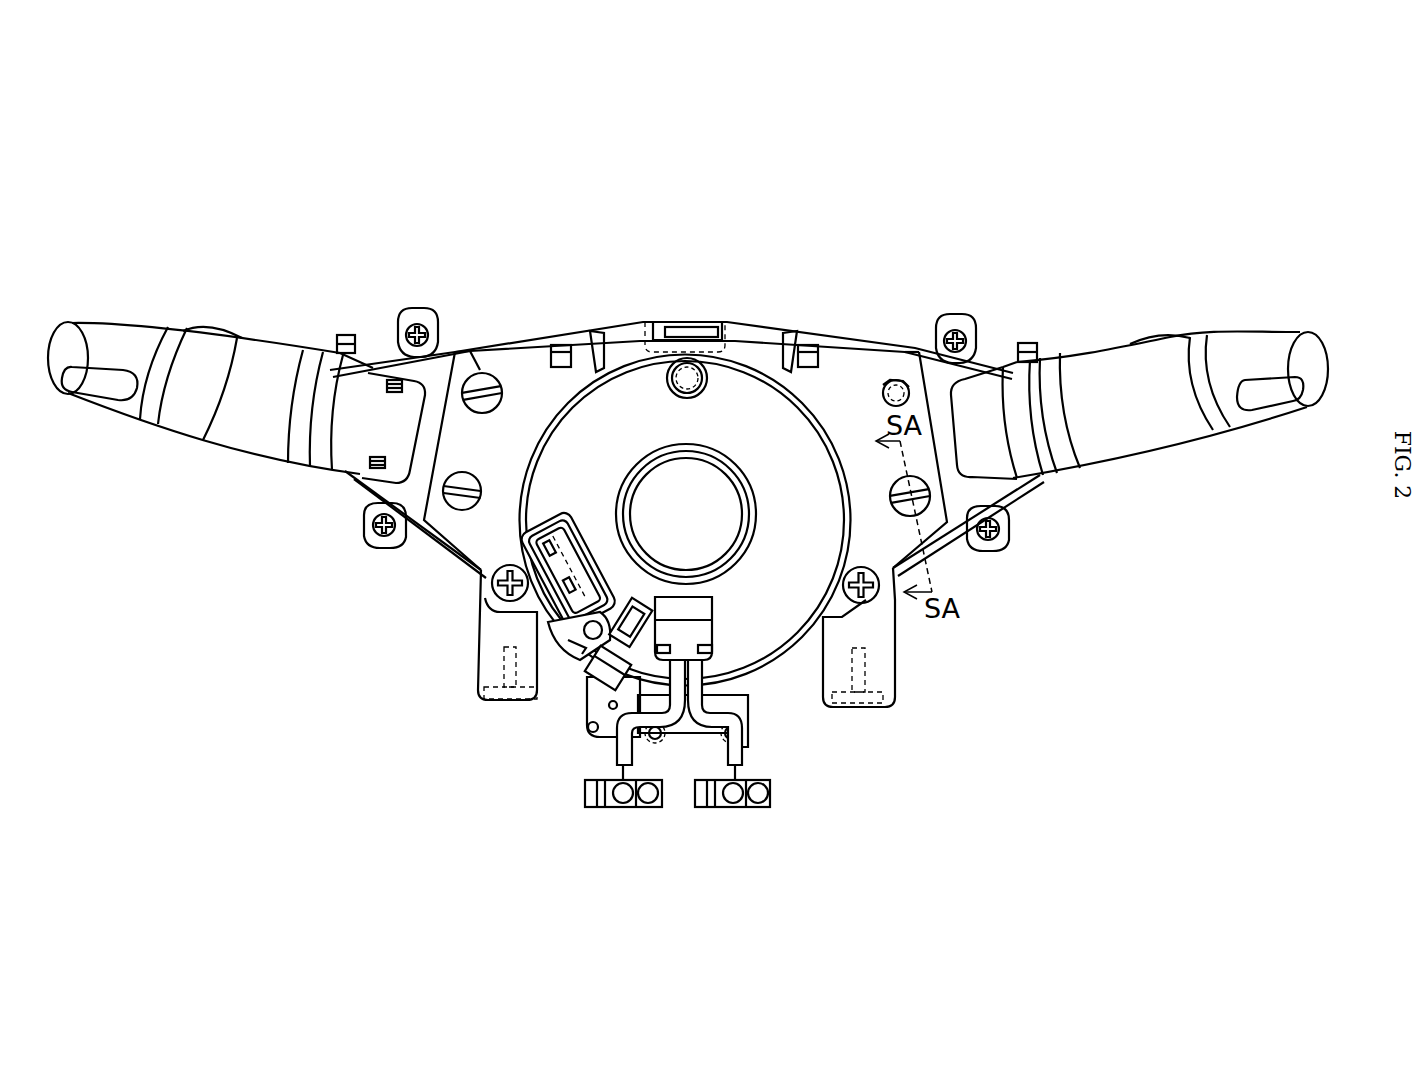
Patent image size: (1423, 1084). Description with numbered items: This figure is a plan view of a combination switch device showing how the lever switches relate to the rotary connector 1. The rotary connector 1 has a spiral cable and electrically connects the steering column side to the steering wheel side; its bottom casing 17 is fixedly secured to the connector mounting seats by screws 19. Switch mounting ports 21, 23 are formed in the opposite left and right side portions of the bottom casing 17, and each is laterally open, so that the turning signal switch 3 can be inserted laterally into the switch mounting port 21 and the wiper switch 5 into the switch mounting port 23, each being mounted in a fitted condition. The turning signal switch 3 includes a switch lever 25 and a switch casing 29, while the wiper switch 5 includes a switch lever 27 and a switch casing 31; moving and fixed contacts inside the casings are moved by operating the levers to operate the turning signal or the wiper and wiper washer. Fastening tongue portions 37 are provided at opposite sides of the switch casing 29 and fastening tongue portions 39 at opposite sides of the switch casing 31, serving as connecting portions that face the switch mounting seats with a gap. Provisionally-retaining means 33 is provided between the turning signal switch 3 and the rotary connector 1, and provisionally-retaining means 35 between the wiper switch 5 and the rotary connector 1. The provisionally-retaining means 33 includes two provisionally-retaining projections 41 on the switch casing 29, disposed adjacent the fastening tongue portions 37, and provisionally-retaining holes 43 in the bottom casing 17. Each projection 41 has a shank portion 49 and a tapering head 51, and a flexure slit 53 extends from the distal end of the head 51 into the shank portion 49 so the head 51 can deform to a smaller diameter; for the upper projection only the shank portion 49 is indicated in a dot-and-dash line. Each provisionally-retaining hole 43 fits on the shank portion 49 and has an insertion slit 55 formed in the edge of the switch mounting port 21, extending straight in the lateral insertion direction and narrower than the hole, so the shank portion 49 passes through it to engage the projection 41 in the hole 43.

The rotary connector 1 is at (812, 395).
The turning signal switch 3 is at (1244, 330).
The wiper switch 5 is at (160, 324).
The bottom casing 17 is at (888, 558).
The screws 19 is at (492, 605).
The switch mounting port 21 is at (975, 355).
The switch mounting port 23 is at (380, 350).
The switch lever 25 is at (1105, 345).
The switch lever 27 is at (278, 360).
The switch casing 29 is at (1000, 358).
The switch casing 31 is at (483, 372).
The provisionally-retaining means 33 is at (899, 362).
The provisionally-retaining means 35 is at (490, 380).
The fastening tongue portions 37 is at (952, 318).
The fastening tongue portions 39 is at (418, 312).
The provisionally-retaining projections 41 is at (497, 385).
The provisionally-retaining holes 43 is at (883, 365).
The shank portion 49 is at (882, 392).
The head 51 is at (900, 515).
The flexure slit 53 is at (503, 390).
The insertion slit 55 is at (452, 345).